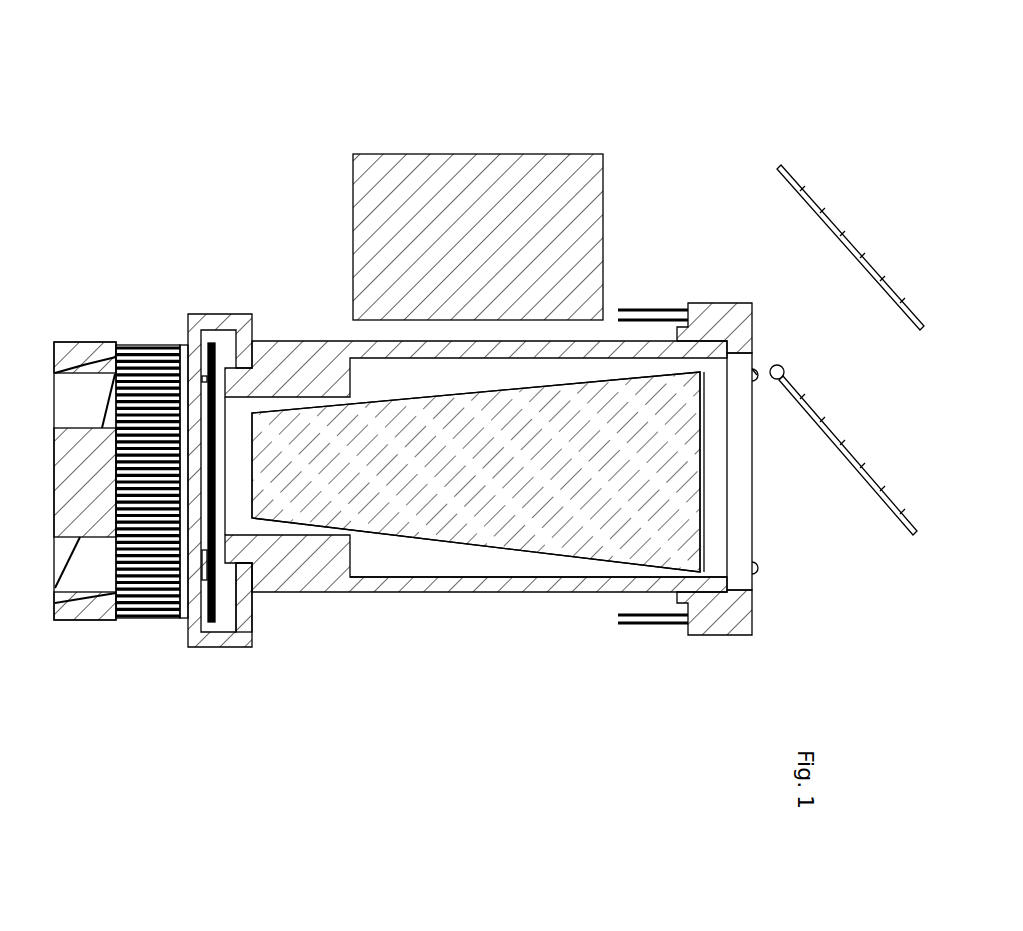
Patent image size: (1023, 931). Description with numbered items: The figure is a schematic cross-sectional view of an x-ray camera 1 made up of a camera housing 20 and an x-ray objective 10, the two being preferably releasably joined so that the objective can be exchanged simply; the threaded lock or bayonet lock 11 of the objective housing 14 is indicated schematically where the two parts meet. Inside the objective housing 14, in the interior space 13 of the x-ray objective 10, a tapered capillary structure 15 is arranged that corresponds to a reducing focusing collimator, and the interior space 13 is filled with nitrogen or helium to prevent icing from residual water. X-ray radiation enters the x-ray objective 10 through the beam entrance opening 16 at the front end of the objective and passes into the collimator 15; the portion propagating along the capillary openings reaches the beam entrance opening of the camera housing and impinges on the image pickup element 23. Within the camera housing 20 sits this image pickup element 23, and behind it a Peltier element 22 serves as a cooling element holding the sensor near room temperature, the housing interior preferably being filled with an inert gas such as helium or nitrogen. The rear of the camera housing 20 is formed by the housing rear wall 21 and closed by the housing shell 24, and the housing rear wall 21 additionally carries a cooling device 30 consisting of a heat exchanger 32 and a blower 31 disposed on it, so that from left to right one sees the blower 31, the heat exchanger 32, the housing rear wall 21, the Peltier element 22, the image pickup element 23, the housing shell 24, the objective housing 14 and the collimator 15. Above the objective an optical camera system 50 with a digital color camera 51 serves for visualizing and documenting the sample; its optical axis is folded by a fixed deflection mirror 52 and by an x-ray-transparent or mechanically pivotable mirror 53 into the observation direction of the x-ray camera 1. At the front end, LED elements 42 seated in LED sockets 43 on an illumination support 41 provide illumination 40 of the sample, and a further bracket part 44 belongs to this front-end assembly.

The x-ray camera 1 is at (266, 168).
The x-ray objective 10 is at (430, 650).
The threaded lock or bayonet lock 11 is at (253, 590).
The interior space 13 is at (495, 562).
The objective housing 14 is at (563, 592).
The capillary structure 15 is at (615, 520).
The beam entrance opening 16 is at (737, 493).
The camera housing 20 is at (216, 678).
The housing rear wall 21 is at (213, 500).
The Peltier element 22 is at (192, 590).
The image pickup element 23 is at (215, 500).
The housing shell 24 is at (236, 563).
The cooling device 30 is at (107, 252).
The blower 31 is at (80, 463).
The heat exchanger 32 is at (147, 433).
The illumination 40 is at (703, 248).
The illumination support 41 is at (742, 345).
The LED elements 42 is at (783, 369).
The LED sockets 43 is at (757, 386).
The bracket with cable 44 is at (748, 312).
The optical camera system 50 is at (508, 143).
The digital color camera 51 is at (550, 212).
The fixed deflection mirror 52 is at (853, 236).
The mirror 53 is at (857, 454).